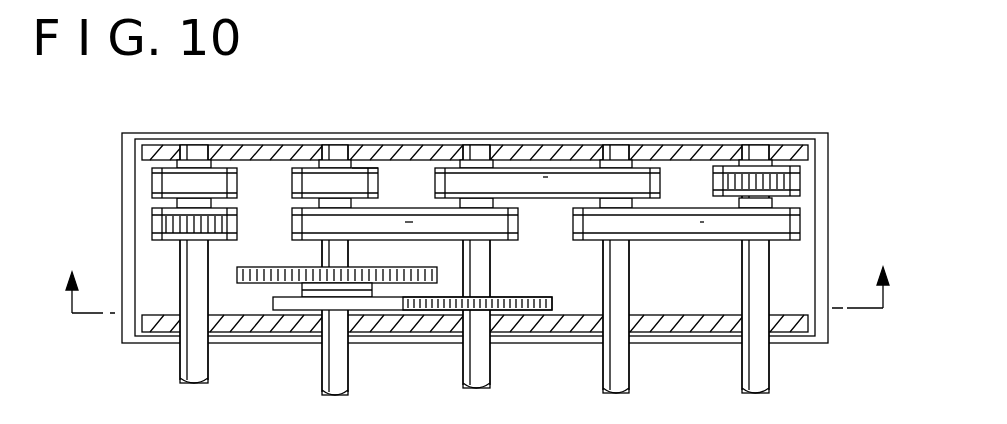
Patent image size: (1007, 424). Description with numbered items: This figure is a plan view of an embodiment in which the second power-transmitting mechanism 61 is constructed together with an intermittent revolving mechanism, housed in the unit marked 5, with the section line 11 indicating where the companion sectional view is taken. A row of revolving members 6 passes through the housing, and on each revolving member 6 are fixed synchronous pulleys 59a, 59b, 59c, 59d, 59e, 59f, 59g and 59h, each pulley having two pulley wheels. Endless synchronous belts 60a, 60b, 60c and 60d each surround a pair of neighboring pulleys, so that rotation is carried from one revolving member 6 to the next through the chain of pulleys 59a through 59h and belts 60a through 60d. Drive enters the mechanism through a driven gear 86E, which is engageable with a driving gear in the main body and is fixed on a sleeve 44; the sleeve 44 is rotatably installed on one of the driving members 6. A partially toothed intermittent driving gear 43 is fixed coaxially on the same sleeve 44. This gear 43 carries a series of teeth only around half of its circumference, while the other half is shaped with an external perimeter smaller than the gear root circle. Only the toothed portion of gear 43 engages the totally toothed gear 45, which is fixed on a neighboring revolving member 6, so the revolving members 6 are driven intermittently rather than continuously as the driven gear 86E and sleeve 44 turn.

The gear box 5 is at (403, 133).
The revolving member 6 is at (206, 378).
The section line 11 is at (478, 272).
The partially toothed intermittent driving gear 43 is at (393, 312).
The sleeve 44 is at (320, 291).
The totally toothed gear 45 is at (545, 312).
The synchronous pulley 59a is at (800, 205).
The synchronous pulley 59b is at (638, 240).
The synchronous pulley 59c is at (583, 168).
The synchronous pulley 59d is at (497, 168).
The synchronous pulley 59e is at (497, 240).
The synchronous pulley 59f is at (288, 203).
The synchronous pulley 59g is at (353, 168).
The synchronous pulley 59h is at (158, 172).
The endless synchronous belt 60a is at (702, 222).
The endless synchronous belt 60b is at (543, 177).
The endless synchronous belt 60c is at (405, 222).
The endless synchronous belt 60d is at (262, 187).
The second power-transmitting mechanism 61 is at (698, 131).
The driven gear 86E is at (248, 263).